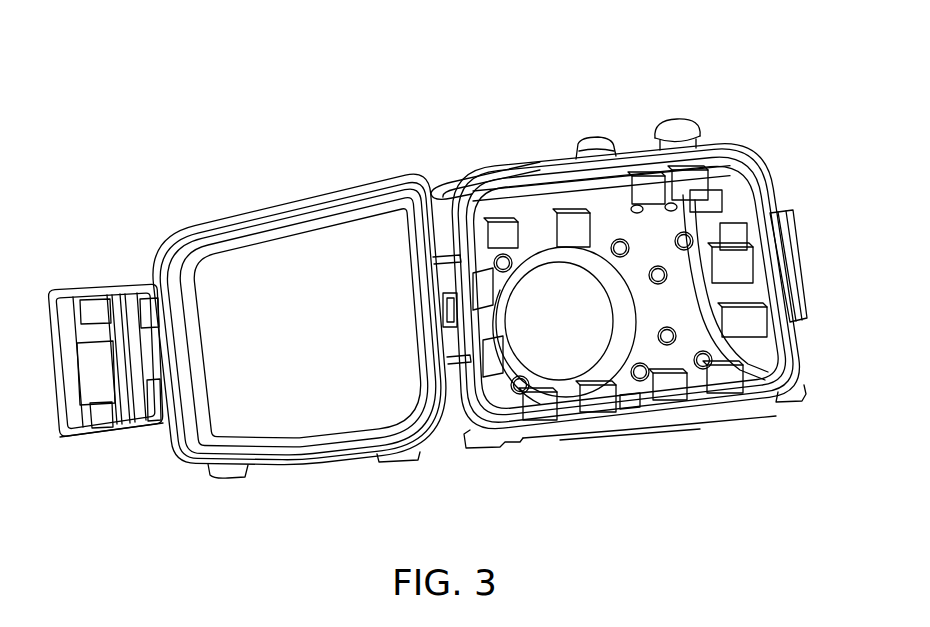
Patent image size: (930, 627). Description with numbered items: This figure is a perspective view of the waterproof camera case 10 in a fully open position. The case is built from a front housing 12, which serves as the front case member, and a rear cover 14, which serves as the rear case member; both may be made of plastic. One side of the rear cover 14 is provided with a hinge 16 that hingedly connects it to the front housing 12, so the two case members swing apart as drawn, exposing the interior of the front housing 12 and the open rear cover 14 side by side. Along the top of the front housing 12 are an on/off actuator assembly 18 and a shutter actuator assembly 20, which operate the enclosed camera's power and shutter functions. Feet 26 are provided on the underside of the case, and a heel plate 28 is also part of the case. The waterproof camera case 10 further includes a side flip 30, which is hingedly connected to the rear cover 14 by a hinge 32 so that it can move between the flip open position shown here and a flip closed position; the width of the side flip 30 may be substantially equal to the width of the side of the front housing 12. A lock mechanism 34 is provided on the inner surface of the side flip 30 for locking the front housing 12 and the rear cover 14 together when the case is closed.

The waterproof camera case 10 is at (736, 106).
The front housing 12 is at (757, 161).
The rear cover 14 is at (288, 204).
The hinge 16 is at (443, 312).
The on/off actuator assembly 18 is at (594, 136).
The shutter actuator assembly 20 is at (673, 116).
The feet 26 is at (493, 448).
The heel plate 28 is at (633, 434).
The side flip 30 is at (54, 289).
The hinge 32 is at (147, 296).
The lock mechanism 34 is at (126, 443).